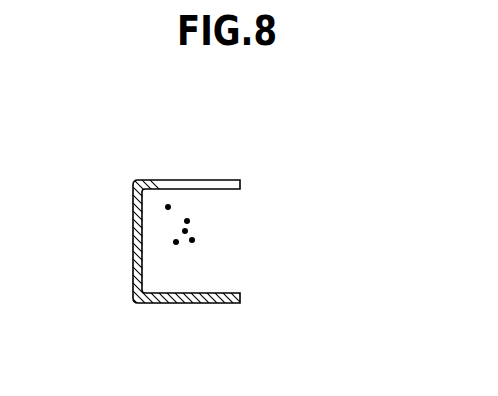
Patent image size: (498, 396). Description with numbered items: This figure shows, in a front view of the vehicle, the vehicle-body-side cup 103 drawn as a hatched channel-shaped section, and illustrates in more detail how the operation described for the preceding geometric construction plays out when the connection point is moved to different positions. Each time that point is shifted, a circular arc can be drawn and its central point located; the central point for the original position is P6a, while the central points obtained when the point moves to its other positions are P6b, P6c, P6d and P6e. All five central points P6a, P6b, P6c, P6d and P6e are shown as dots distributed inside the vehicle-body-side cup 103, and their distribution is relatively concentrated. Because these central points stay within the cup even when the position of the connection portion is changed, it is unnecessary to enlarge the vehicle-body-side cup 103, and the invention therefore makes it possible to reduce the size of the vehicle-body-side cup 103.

The vehicle-body-side cup 103 is at (162, 180).
The central point of the circular arc P6a is at (185, 231).
The central point of the circular arc P6b is at (168, 207).
The central point of the circular arc P6c is at (187, 221).
The central point of the circular arc P6d is at (176, 242).
The central point of the circular arc P6e is at (192, 240).